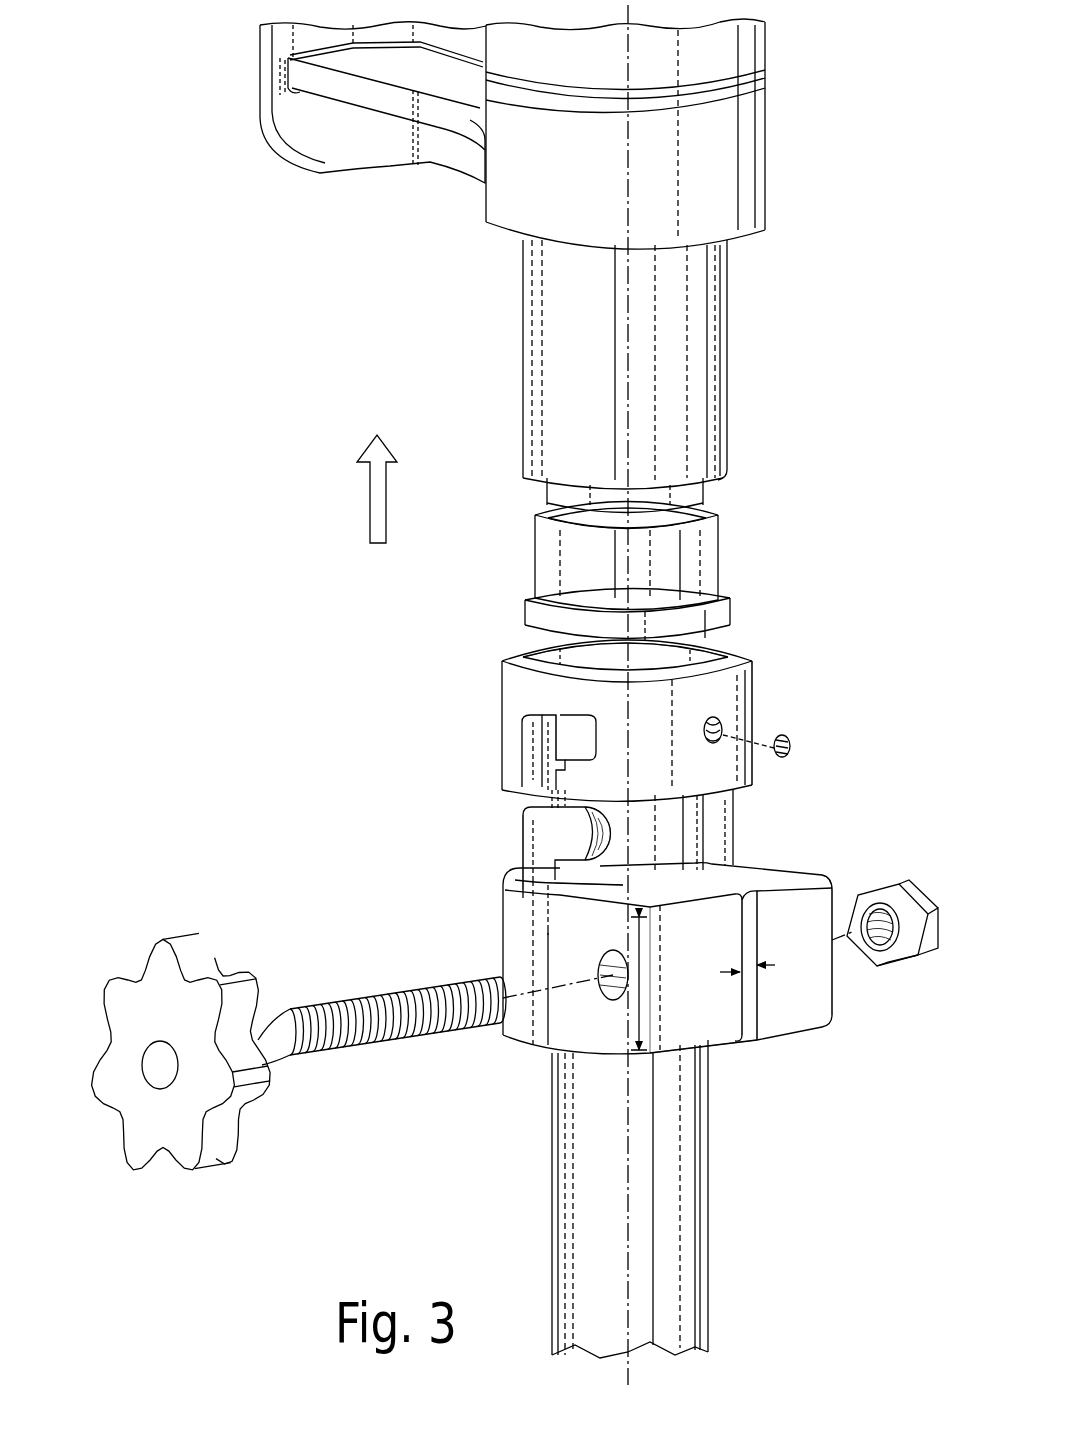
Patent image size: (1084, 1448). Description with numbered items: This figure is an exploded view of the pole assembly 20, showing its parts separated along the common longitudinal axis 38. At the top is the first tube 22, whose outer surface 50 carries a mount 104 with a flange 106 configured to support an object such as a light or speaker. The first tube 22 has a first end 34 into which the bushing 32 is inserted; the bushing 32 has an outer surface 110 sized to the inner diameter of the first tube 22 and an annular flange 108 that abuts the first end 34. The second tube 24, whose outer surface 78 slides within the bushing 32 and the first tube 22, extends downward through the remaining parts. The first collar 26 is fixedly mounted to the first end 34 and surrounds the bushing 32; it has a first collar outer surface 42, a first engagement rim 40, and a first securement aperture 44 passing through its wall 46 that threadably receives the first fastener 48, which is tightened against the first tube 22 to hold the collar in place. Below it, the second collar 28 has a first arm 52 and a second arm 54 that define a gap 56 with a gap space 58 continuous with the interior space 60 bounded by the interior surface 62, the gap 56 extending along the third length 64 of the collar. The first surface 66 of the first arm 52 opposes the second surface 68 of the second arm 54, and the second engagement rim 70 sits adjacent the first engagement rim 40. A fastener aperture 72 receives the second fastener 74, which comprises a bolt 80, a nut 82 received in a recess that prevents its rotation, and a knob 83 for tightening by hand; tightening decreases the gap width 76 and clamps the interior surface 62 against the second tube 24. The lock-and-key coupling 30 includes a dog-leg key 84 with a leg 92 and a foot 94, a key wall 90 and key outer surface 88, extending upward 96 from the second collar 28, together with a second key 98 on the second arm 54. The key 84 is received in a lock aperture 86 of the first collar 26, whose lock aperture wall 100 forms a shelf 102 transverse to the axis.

The pole assembly 20 is at (858, 140).
The first tube 22 is at (713, 338).
The second tube 24 is at (693, 1240).
The first collar 26 is at (748, 687).
The second collar 28 is at (512, 918).
The lock-and-key coupling 30 is at (455, 807).
The bushing 32 is at (718, 553).
The first end 34 is at (727, 477).
The common longitudinal axis 38 is at (628, 185).
The first engagement rim 40 is at (792, 752).
The first collar outer surface 42 is at (668, 738).
The first securement aperture 44 is at (722, 725).
The wall 46 is at (517, 653).
The first fastener 48 is at (792, 738).
The outer surface 50 is at (562, 362).
The first arm 52 is at (707, 1033).
The second arm 54 is at (800, 1025).
The gap 56 is at (752, 893).
The gap space 58 is at (745, 907).
The interior space 60 is at (698, 860).
The interior surface 62 is at (590, 886).
The third length 64 is at (638, 1022).
The first surface 66 is at (740, 1008).
The second surface 68 is at (750, 942).
The second engagement rim 70 is at (650, 890).
The fastener aperture 72 is at (610, 985).
The second fastener 74 is at (103, 933).
The gap width 76 is at (778, 965).
The outer surface 78 is at (613, 1212).
The bolt 80 is at (398, 1032).
The nut 82 is at (903, 888).
The knob 83 is at (172, 997).
The key 84 is at (522, 858).
The lock aperture 86 is at (565, 725).
The key outer surface 88 is at (607, 832).
The key wall 90 is at (545, 805).
The leg 92 is at (548, 888).
The foot 94 is at (582, 823).
The upward 96 is at (370, 500).
The second key 98 is at (735, 800).
The lock aperture wall 100 is at (530, 743).
The shelf 102 is at (570, 763).
The mount 104 is at (445, 215).
The flange 106 is at (325, 148).
The annular flange 108 is at (712, 622).
The outer surface 110 is at (598, 581).